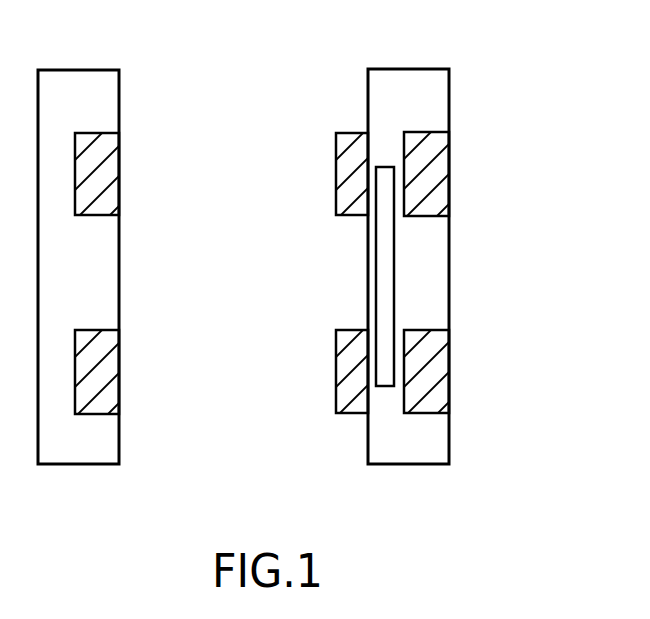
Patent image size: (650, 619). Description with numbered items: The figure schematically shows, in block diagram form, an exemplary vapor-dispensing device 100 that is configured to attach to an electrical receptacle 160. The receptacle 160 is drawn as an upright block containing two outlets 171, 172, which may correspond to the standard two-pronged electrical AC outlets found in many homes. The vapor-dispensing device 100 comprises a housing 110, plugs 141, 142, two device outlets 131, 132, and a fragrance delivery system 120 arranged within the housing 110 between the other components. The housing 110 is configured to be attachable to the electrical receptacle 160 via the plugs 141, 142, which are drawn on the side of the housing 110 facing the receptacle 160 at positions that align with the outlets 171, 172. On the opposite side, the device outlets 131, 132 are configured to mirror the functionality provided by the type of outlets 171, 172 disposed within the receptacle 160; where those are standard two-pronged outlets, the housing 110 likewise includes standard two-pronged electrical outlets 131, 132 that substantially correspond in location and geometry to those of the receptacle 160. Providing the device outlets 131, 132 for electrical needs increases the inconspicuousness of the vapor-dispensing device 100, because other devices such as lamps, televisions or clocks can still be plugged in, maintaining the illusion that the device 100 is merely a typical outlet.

The vapor-dispensing device 100 is at (400, 246).
The housing 110 is at (449, 437).
The fragrance delivery system 120 is at (390, 386).
The device outlet 131 is at (449, 153).
The device outlet 132 is at (449, 355).
The plug 141 is at (336, 168).
The plug 142 is at (336, 363).
The electrical receptacle 160 is at (80, 70).
The outlet 171 is at (119, 158).
The outlet 172 is at (119, 370).